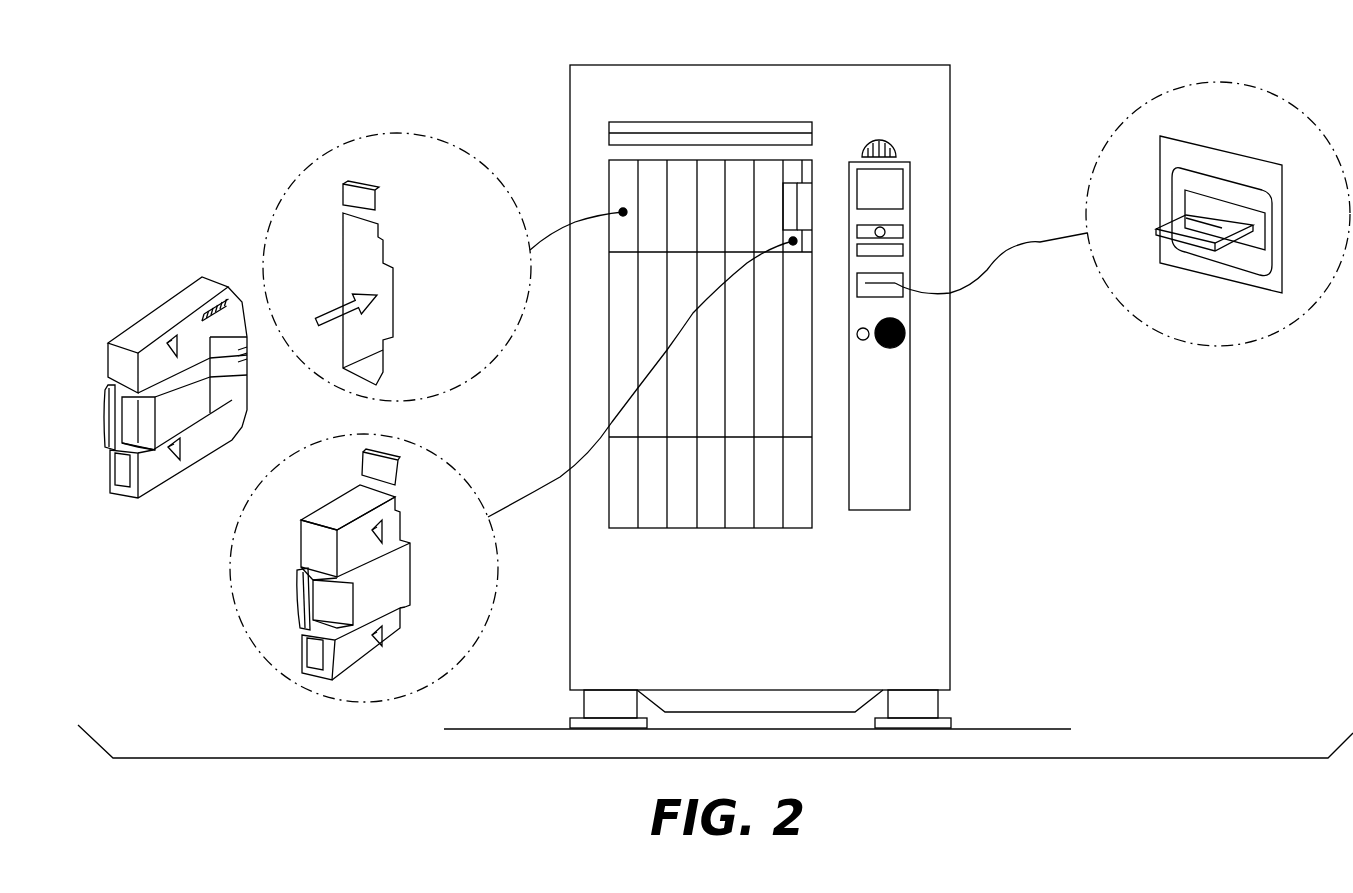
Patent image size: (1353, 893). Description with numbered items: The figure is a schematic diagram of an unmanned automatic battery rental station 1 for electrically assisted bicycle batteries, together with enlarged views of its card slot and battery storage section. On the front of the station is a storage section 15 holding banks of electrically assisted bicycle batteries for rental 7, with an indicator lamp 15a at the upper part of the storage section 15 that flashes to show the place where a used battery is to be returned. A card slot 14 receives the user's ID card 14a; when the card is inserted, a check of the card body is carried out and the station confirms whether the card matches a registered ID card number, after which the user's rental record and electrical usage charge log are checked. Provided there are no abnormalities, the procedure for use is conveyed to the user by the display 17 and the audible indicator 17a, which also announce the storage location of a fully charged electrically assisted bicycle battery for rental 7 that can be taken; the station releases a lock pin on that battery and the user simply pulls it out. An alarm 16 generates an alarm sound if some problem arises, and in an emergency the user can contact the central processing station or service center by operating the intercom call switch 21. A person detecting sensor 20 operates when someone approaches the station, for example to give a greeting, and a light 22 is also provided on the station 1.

The unmanned automatic battery rental station 1 is at (673, 65).
The electrically assisted bicycle battery for rental 7 is at (158, 302).
The card slot 14 is at (1220, 78).
The ID card 14a is at (1210, 240).
The storage section 15 is at (440, 140).
The indicator lamp 15a is at (375, 198).
The alarm 16 is at (883, 140).
The display 17 is at (895, 187).
The audible indicator 17a is at (905, 333).
The person detecting sensor 20 is at (897, 232).
The intercom call switch 21 is at (865, 342).
The light 22 is at (773, 121).